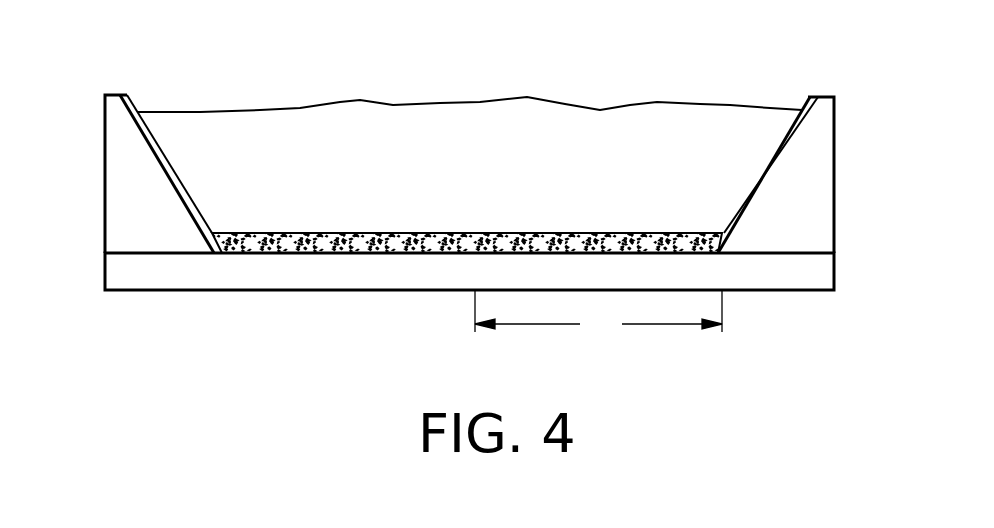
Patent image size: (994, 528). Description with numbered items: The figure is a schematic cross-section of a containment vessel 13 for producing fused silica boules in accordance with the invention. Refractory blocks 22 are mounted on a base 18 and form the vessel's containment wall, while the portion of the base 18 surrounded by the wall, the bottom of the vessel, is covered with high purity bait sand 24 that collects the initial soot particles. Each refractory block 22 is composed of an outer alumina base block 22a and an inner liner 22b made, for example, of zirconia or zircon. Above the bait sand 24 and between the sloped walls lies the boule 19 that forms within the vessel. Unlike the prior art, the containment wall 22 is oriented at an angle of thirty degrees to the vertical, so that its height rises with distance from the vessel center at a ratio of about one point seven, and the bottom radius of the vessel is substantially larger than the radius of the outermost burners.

The containment vessel 13 is at (480, 237).
The base 18 is at (785, 283).
The boule 19 is at (434, 164).
The refractory blocks 22 is at (110, 116).
The outer alumina base block 22a is at (817, 213).
The inner liner 22b is at (772, 157).
The bait sand 24 is at (492, 237).